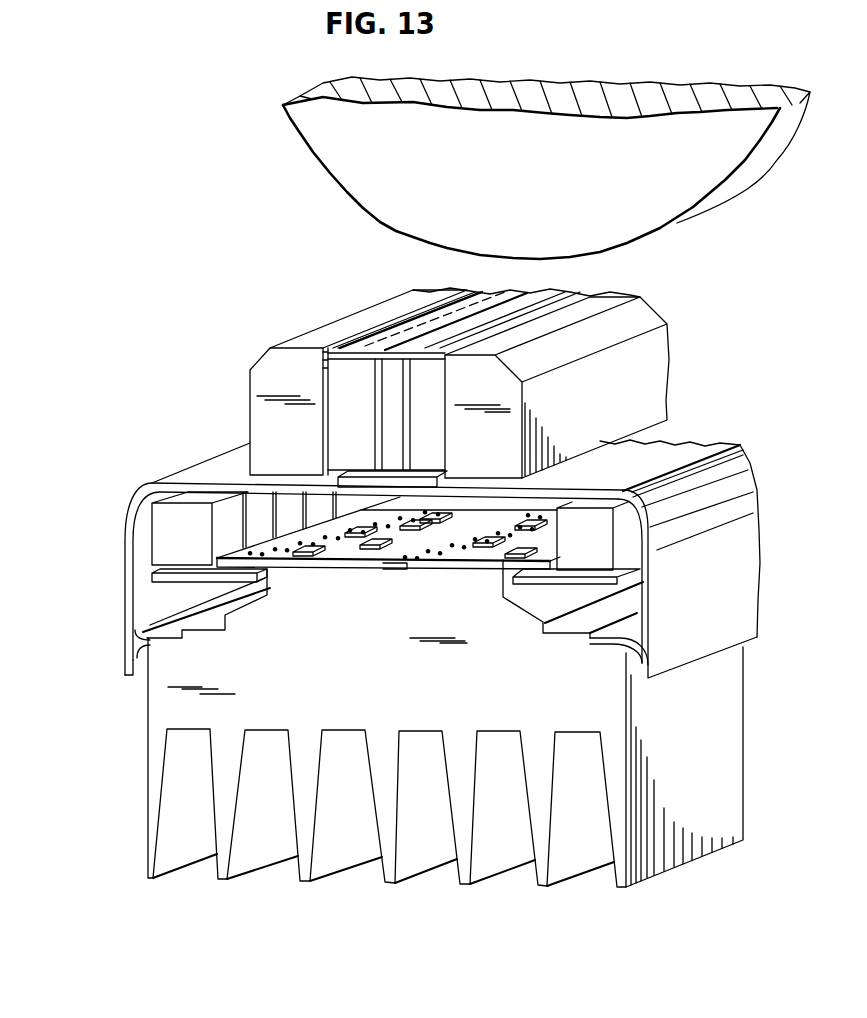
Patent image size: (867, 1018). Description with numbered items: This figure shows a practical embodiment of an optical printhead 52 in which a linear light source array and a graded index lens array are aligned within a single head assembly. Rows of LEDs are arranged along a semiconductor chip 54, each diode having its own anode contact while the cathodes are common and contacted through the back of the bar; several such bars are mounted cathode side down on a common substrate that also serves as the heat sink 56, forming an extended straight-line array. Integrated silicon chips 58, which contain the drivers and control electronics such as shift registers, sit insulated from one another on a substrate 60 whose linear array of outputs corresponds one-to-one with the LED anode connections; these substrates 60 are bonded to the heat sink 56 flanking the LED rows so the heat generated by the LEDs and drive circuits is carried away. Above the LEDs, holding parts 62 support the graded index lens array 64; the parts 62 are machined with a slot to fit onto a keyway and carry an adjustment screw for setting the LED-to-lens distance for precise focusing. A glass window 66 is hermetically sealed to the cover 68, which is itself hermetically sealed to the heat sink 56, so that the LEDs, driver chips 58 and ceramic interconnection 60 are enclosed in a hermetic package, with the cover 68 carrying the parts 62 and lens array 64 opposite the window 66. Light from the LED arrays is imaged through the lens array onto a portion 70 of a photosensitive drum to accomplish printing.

The optical printhead 52 is at (121, 808).
The semiconductor chip 54 is at (398, 569).
The heat sink 56 is at (156, 690).
The integrated silicon chips 58 is at (360, 548).
The substrate 60 is at (292, 565).
The lens array holding parts 62 is at (407, 300).
The graded index lens array 64 is at (380, 428).
The glass window 66 is at (418, 477).
The cover 68 is at (138, 550).
The drum portion 70 is at (697, 203).